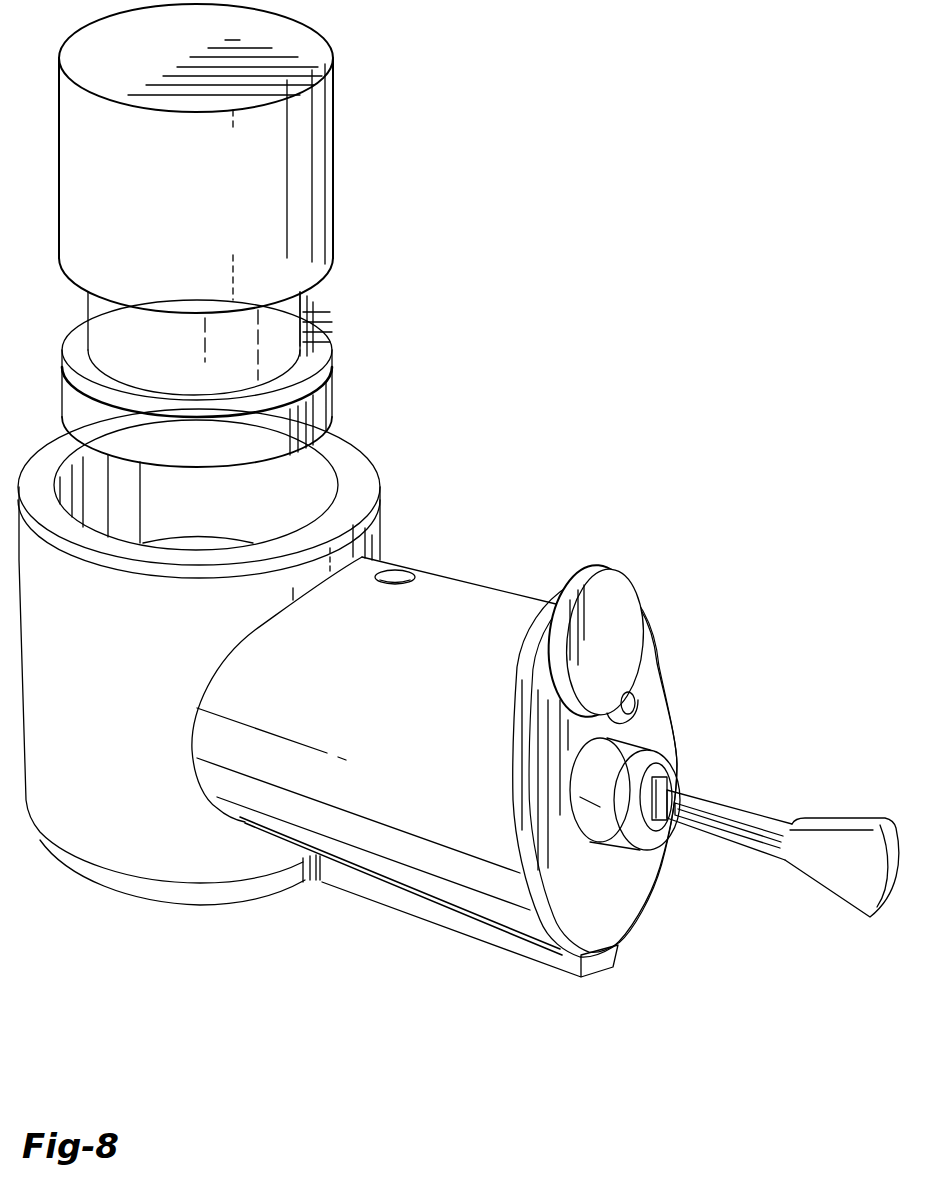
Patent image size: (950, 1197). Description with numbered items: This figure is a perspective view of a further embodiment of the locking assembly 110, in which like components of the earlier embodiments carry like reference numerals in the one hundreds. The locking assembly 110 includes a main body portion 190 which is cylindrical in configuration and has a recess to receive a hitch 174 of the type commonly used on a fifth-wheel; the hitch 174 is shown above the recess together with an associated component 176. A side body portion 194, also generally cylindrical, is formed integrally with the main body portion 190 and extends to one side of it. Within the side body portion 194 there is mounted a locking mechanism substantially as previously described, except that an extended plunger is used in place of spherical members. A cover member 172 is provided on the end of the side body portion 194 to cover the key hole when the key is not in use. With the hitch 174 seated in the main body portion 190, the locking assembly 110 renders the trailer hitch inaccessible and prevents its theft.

The locking assembly 110 is at (666, 289).
The cover member 172 is at (625, 678).
The hitch 174 is at (348, 159).
The flange 176 is at (318, 342).
The main body portion 190 is at (111, 718).
The side body portion 194 is at (456, 737).